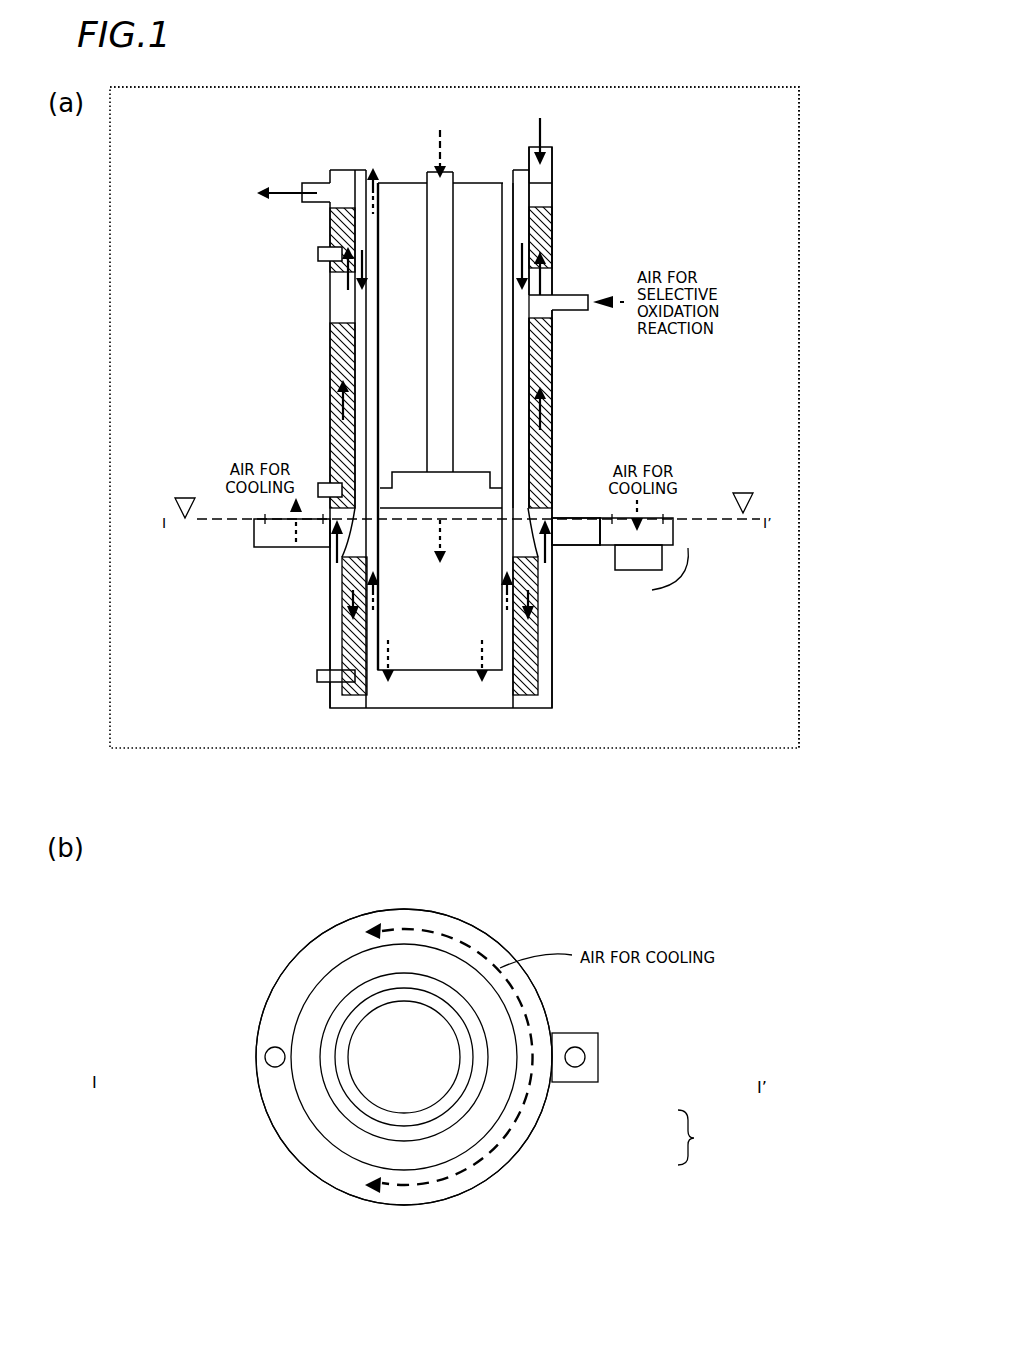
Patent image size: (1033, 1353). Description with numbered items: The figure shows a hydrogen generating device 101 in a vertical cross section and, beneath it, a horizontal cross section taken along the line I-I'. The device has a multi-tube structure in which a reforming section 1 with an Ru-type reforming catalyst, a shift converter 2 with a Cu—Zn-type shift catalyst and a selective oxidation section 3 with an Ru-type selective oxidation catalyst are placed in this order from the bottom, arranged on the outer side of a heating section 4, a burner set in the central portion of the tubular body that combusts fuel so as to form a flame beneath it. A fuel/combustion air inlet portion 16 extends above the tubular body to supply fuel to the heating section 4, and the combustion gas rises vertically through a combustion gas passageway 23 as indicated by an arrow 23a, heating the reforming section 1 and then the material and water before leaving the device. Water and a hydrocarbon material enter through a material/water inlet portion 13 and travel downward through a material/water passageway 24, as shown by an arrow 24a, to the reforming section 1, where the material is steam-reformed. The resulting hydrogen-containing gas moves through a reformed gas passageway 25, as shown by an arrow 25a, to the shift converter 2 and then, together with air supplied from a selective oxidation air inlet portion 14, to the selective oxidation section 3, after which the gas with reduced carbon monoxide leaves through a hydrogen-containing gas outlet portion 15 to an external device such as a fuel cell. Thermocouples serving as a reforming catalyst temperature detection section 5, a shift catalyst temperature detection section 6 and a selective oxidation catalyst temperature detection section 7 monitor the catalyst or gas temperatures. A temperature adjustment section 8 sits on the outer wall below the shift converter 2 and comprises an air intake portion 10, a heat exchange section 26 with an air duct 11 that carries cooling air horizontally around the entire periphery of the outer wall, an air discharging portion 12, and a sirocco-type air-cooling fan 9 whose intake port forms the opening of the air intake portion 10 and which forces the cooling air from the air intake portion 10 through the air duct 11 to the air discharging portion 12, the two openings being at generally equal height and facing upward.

The reforming section 1 is at (533, 688).
The shift converter 2 is at (552, 420).
The selective oxidation section 3 is at (552, 234).
The heating section 4 is at (462, 482).
The reforming catalyst temperature detection section 5 is at (327, 670).
The shift catalyst temperature detection section 6 is at (330, 481).
The selective oxidation catalyst temperature detection section 7 is at (330, 253).
The temperature adjustment section 8 is at (682, 580).
The air-cooling fan 9 is at (643, 555).
The air intake portion 10 is at (650, 518).
The air duct 11 is at (570, 527).
The air discharging portion 12 is at (273, 518).
The material/water inlet portion 13 is at (547, 146).
The selective oxidation air inlet portion 14 is at (585, 311).
The hydrogen-containing gas outlet portion 15 is at (303, 187).
The fuel/combustion air inlet portion 16 is at (435, 172).
The combustion gas passageway 23 is at (510, 648).
The arrow indicating combustion exhaust gas flow 23a is at (545, 620).
The material/water passageway 24 is at (522, 460).
The arrow indicating material and water flow 24a is at (553, 261).
The reformed gas passageway 25 is at (547, 608).
The arrow indicating reformed gas flow 25a is at (548, 553).
The heat exchange section 26 is at (466, 820).
The hydrogen generating device 101 is at (800, 205).